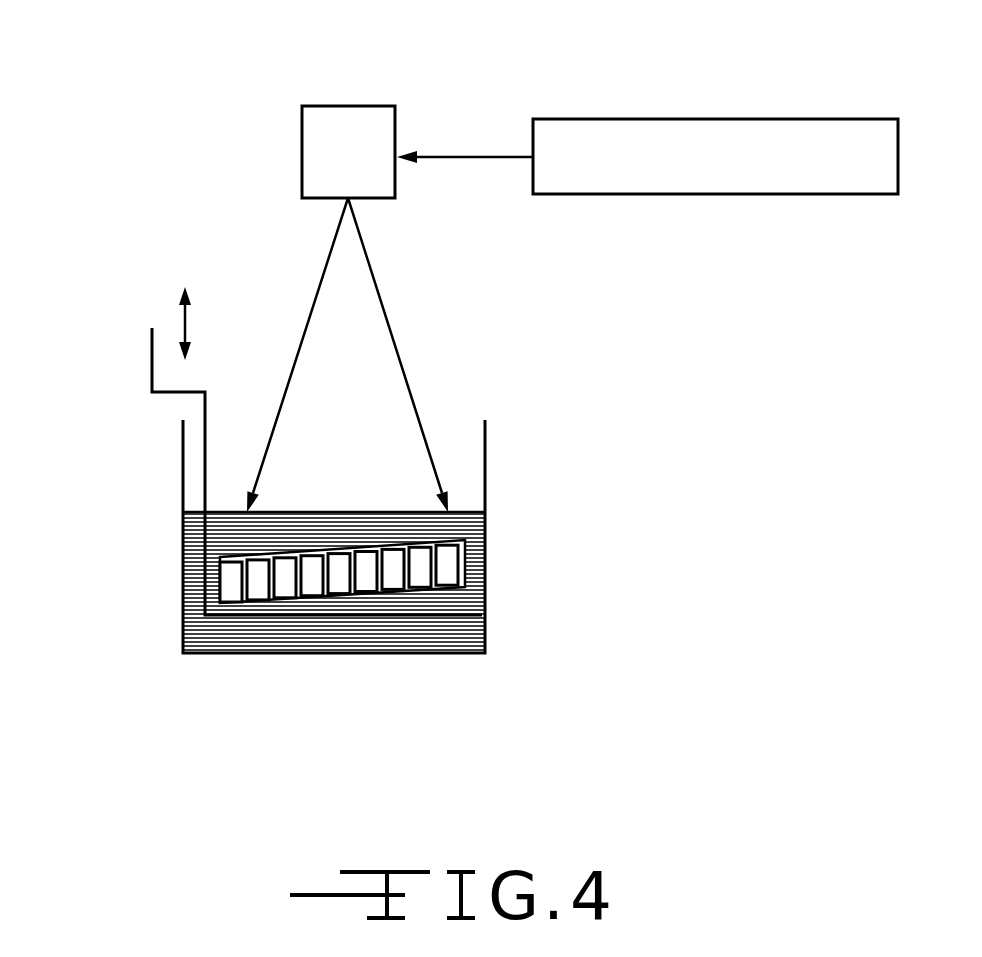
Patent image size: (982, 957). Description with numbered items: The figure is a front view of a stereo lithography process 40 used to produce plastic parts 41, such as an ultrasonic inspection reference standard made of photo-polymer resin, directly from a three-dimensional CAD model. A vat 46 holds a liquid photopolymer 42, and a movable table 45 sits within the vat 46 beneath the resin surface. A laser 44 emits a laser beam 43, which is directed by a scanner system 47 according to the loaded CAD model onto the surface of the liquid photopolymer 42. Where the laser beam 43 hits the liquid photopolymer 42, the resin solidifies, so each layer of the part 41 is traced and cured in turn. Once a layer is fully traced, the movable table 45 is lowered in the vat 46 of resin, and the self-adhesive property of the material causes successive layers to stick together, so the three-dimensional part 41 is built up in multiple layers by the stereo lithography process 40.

The stereo lithography process 40 is at (645, 302).
The plastic parts 41 is at (242, 555).
The liquid photopolymer 42 is at (410, 633).
The laser beam 43 is at (310, 318).
The laser 44 is at (805, 119).
The movable table 45 is at (150, 352).
The vat 46 is at (183, 615).
The scanner system 47 is at (335, 106).